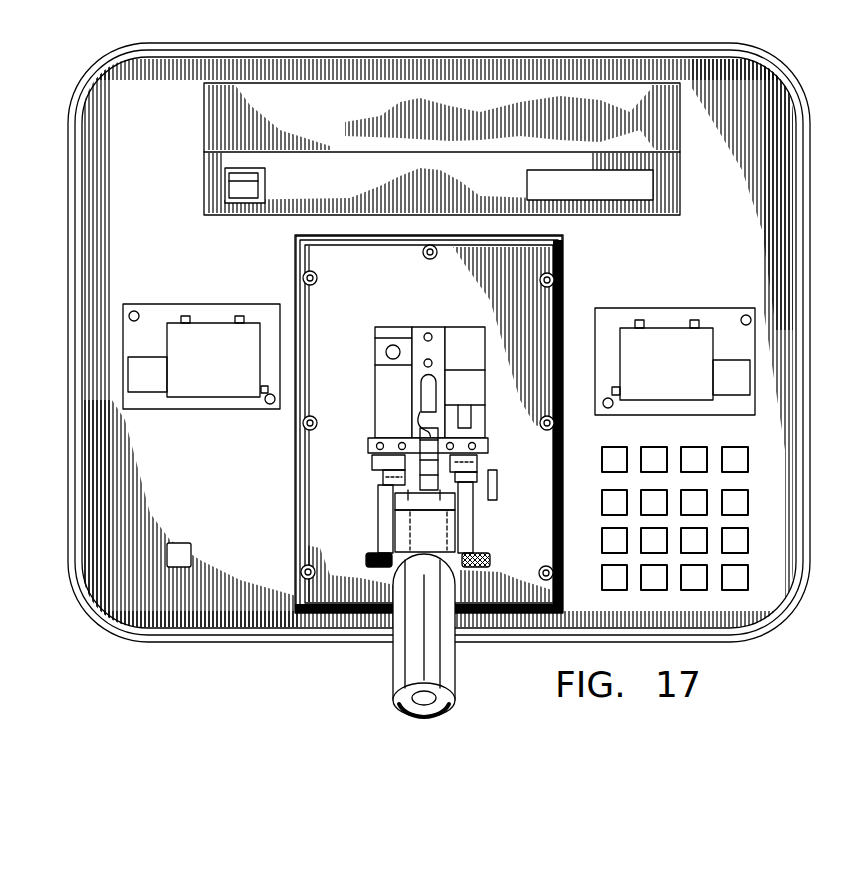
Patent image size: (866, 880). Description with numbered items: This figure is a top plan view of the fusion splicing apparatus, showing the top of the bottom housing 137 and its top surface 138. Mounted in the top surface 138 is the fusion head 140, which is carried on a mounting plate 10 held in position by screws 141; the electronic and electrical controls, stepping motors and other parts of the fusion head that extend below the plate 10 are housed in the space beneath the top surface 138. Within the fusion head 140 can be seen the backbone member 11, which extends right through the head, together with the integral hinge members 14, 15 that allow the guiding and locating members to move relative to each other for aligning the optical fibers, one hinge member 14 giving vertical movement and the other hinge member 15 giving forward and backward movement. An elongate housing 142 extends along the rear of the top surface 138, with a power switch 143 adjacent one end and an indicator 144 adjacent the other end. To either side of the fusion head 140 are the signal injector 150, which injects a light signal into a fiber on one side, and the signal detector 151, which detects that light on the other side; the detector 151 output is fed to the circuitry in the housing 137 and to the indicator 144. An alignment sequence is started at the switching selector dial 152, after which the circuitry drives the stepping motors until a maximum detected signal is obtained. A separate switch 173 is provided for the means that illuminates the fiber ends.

The housing 137 is at (537, 46).
The elongate housing 142 is at (663, 130).
The power switch 143 is at (241, 190).
The indicator 144 is at (594, 185).
The fusion head 140 is at (483, 280).
The mounting plate 10 is at (345, 262).
The screws 141 is at (303, 281).
The hinge member 14 is at (385, 412).
The backbone member 11 is at (444, 336).
The hinge member 15 is at (470, 394).
The signal injector 150 is at (186, 370).
The signal detector 151 is at (700, 360).
The switching selector dial 152 is at (765, 522).
The switch 173 is at (183, 555).
The top surface 138 is at (727, 291).